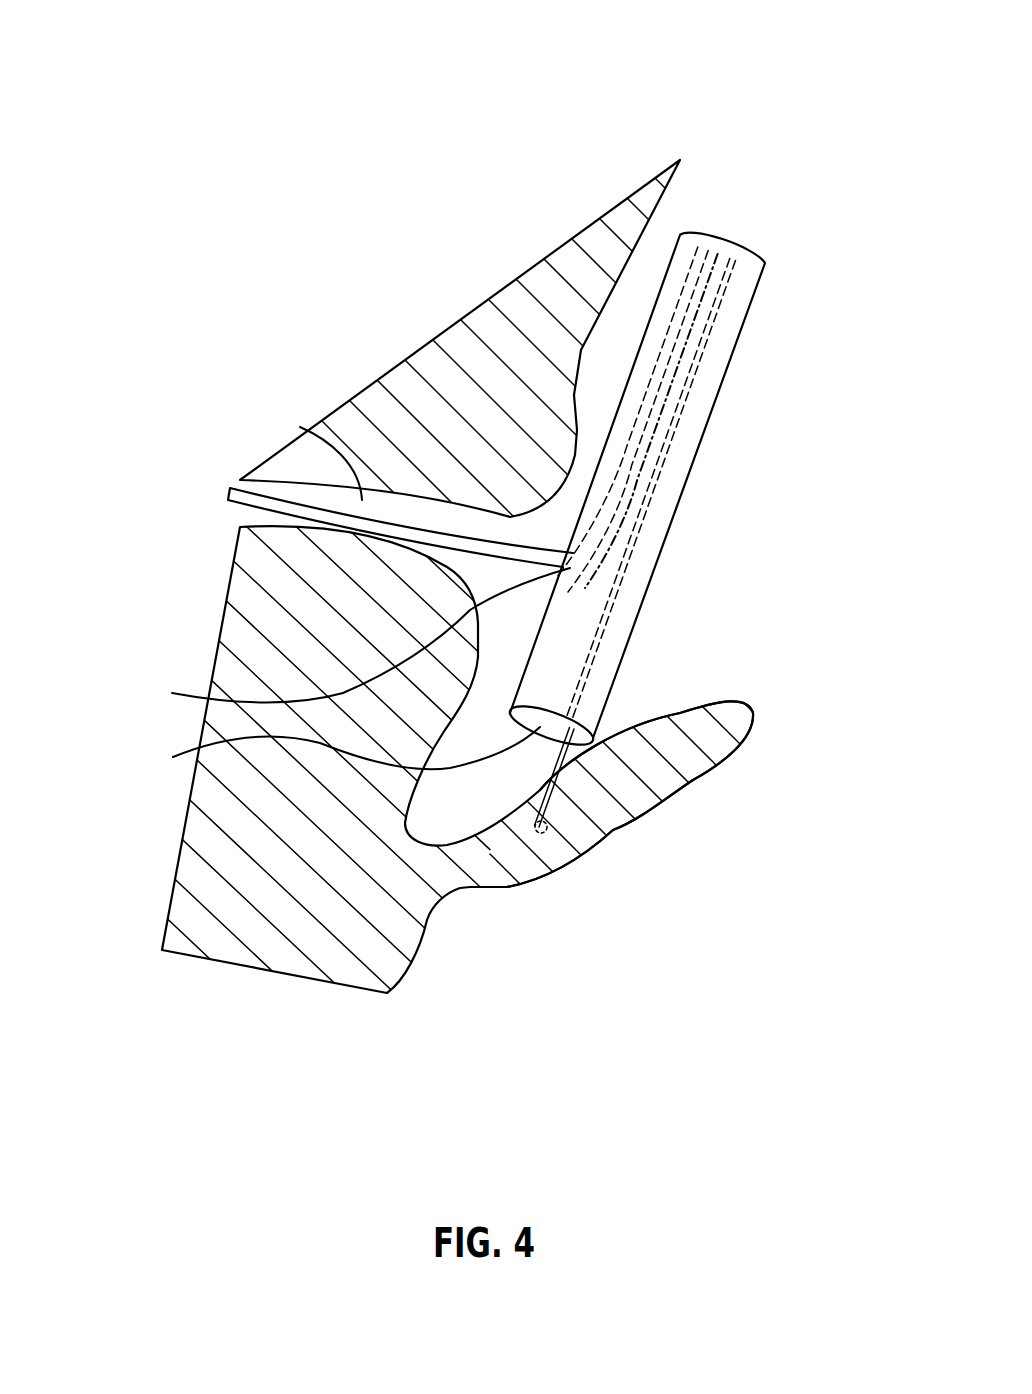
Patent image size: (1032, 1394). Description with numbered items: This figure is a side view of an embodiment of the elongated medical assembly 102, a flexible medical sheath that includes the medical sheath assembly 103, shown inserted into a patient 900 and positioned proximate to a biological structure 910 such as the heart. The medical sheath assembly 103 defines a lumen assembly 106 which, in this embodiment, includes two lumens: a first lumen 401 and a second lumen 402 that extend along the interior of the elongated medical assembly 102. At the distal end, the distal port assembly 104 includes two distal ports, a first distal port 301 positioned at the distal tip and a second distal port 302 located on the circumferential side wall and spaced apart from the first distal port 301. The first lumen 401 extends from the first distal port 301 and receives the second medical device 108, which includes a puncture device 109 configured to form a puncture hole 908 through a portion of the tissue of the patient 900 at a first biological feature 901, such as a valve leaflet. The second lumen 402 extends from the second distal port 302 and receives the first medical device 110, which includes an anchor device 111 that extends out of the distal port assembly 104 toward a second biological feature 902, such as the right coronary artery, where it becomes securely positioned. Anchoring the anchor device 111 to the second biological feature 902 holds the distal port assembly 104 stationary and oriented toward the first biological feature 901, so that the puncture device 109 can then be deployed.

The patient 900 is at (380, 160).
The biological structure 910 is at (482, 303).
The second biological feature 902 is at (300, 427).
The anchor device 111 is at (225, 492).
The first medical device 110 is at (150, 355).
The distal port assembly 104 is at (117, 673).
The second distal port 302 is at (343, 639).
The first distal port 301 is at (327, 753).
The first biological feature 901 is at (678, 800).
The elongated medical assembly 102 is at (710, 475).
The medical sheath assembly 103 is at (713, 417).
The first lumen 401 is at (727, 242).
The second lumen 402 is at (690, 237).
The lumen assembly 106 is at (868, 155).
The puncture hole 908 is at (555, 835).
The puncture device 109 is at (620, 837).
The second medical device 108 is at (772, 910).